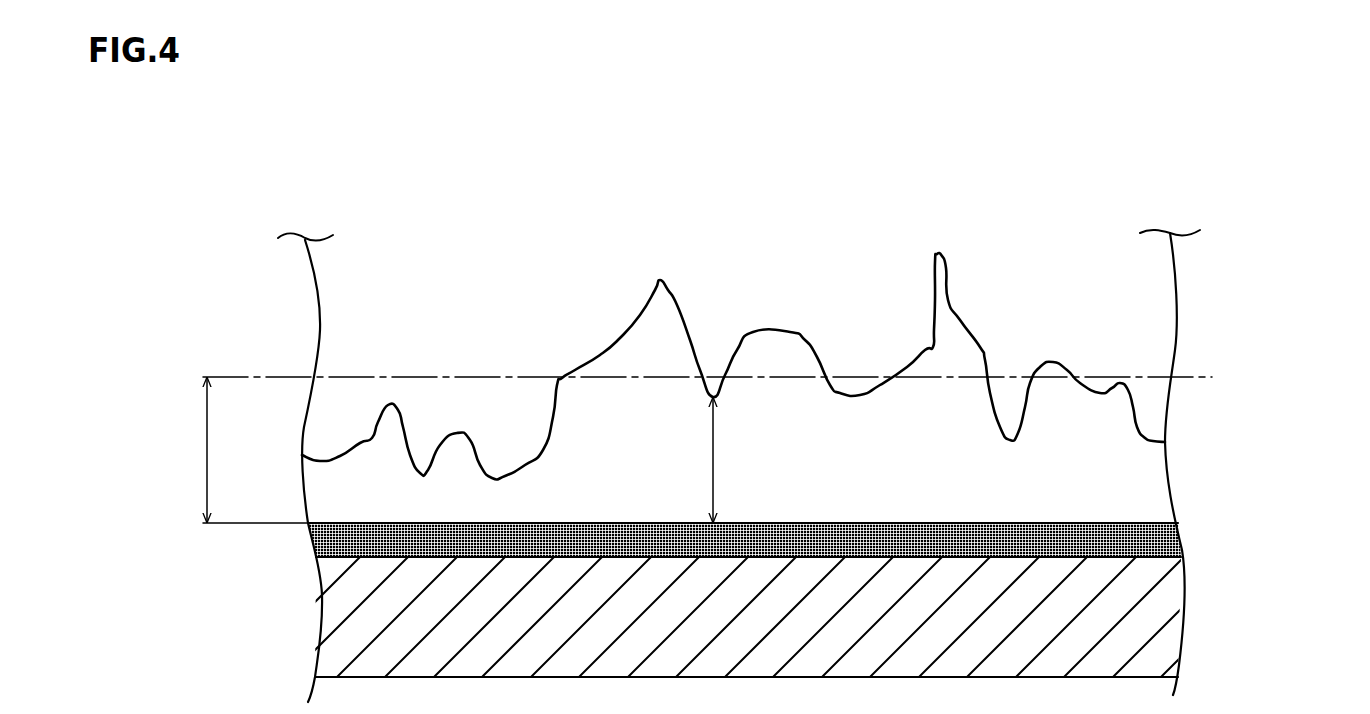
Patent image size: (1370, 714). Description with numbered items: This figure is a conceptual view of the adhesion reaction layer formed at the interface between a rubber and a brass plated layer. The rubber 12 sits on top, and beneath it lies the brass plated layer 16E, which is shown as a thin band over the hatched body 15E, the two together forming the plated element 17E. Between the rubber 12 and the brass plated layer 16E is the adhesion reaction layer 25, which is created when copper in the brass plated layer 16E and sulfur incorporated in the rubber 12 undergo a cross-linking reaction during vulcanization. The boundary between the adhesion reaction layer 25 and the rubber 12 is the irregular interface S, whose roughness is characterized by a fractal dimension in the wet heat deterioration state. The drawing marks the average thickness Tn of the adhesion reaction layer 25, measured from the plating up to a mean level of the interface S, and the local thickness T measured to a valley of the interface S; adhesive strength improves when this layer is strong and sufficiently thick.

The rubber 12 is at (1072, 272).
The adhesion reaction layer 25 is at (805, 370).
The interface S is at (1137, 415).
The brass plated layer 16E is at (1177, 535).
The base layer 15E is at (1152, 595).
The substrate 17E is at (772, 600).
The thickness T is at (724, 460).
The average thickness Tn is at (239, 450).